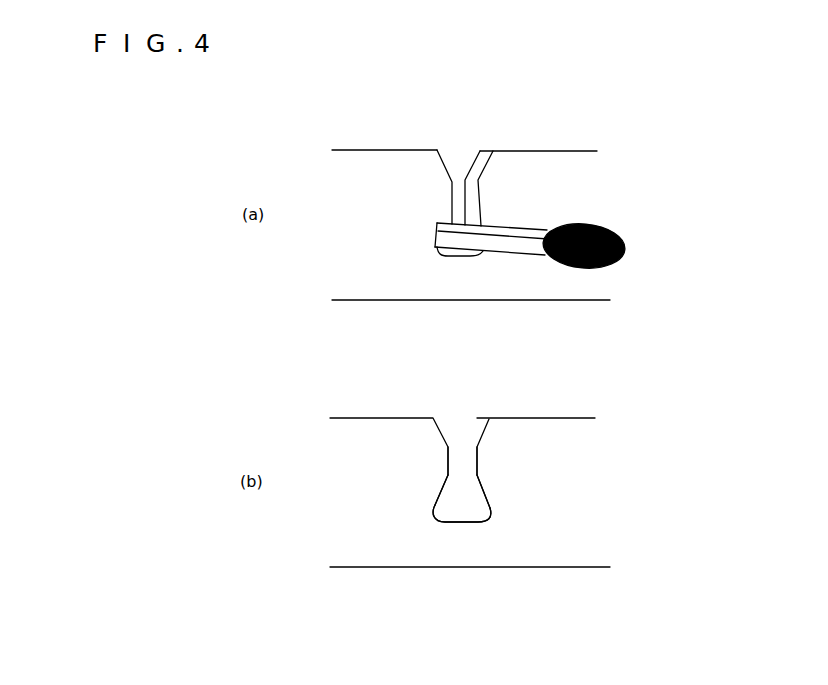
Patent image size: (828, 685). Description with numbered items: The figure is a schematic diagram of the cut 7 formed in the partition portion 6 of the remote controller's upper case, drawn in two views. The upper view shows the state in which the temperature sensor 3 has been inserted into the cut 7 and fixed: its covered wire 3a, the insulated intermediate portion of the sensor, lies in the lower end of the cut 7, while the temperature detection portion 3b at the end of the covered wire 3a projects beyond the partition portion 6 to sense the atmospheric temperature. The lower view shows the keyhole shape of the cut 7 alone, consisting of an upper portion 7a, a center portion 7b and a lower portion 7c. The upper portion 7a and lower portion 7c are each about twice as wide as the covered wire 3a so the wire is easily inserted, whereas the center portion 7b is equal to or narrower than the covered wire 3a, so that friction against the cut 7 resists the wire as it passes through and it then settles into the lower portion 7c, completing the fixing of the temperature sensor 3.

The temperature sensor 3 is at (562, 212).
The covered wire 3a is at (523, 226).
The temperature detection portion 3b is at (622, 238).
The partition portion 6 is at (547, 150).
The cut 7 is at (463, 197).
The upper portion 7a is at (472, 440).
The center portion 7b is at (472, 470).
The lower portion 7c is at (470, 515).